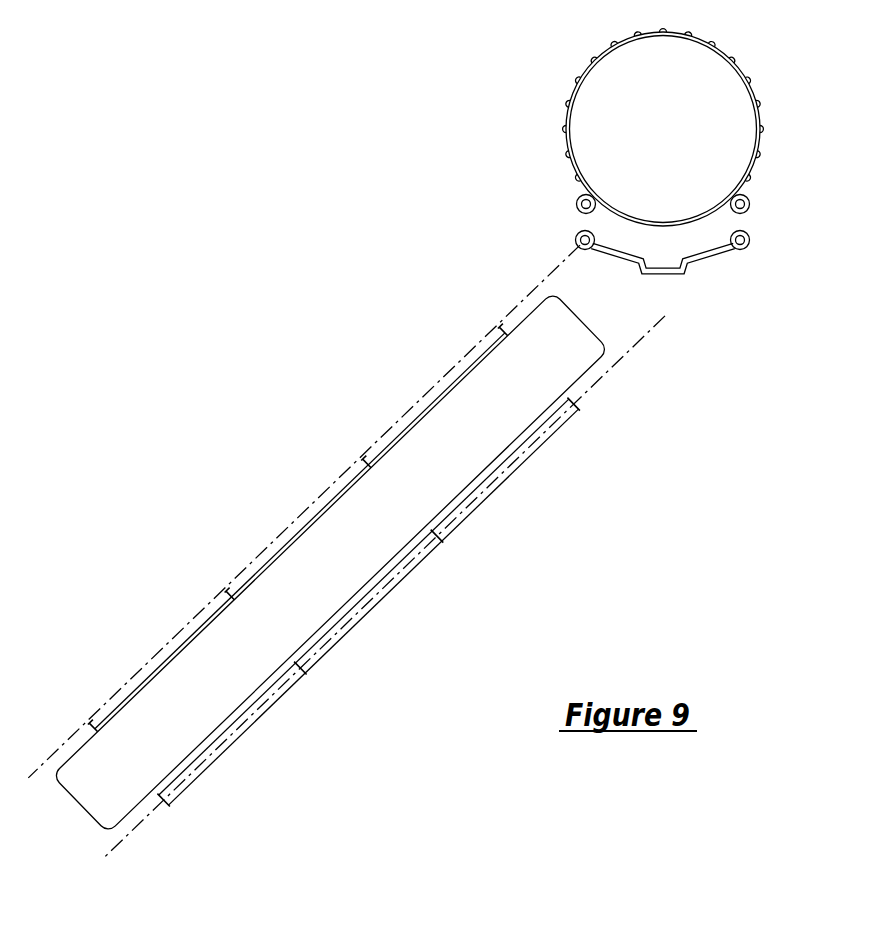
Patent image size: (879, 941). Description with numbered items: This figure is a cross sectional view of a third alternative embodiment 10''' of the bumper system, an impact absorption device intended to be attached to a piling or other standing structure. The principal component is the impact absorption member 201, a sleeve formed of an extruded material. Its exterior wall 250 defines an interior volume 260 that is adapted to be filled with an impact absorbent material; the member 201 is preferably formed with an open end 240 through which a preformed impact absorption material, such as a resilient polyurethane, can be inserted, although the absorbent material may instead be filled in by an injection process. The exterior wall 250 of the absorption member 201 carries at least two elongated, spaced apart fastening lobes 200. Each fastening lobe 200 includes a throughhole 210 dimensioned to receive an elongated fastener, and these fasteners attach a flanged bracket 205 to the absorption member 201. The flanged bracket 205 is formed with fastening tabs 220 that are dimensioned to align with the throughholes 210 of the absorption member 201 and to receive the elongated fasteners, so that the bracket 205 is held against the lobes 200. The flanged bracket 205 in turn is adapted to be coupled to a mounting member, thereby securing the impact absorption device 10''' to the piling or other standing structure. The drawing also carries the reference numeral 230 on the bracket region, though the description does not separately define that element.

The bumper system 10''' is at (695, 125).
The impact absorption member 201 is at (570, 96).
The interior volume 260 is at (660, 131).
The fastening lobe 200 is at (577, 204).
The throughhole 210 is at (752, 206).
The flanged bracket 205 is at (641, 273).
The fastening tab 220 is at (751, 242).
The bracket arm 230 is at (728, 249).
The open end 240 is at (92, 808).
The exterior wall 250 is at (363, 593).